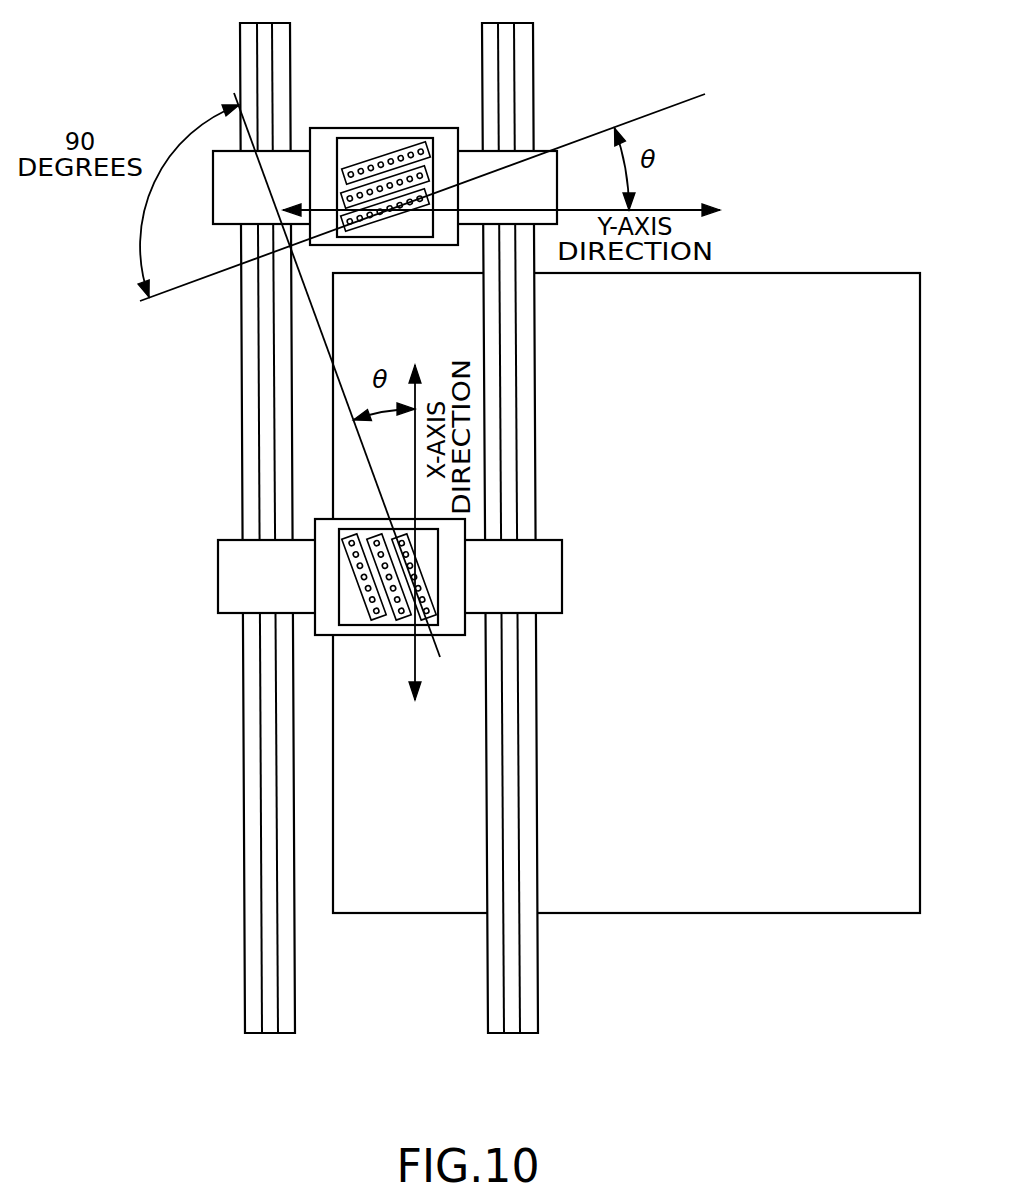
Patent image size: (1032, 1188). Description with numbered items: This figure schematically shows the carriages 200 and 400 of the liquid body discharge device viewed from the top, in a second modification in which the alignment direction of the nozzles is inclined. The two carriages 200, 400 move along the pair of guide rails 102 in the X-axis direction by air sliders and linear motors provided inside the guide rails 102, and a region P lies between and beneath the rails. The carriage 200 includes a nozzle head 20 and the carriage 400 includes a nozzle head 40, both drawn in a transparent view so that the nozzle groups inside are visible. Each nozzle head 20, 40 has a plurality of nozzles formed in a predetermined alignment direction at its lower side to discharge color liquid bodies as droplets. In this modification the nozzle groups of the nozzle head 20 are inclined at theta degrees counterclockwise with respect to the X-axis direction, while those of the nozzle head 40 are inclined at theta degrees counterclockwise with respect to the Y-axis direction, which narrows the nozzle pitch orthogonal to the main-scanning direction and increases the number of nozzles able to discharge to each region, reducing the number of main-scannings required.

The recording medium P is at (822, 271).
The guide rails 102 is at (250, 721).
The carriage 400 is at (323, 138).
The nozzle head 40 is at (390, 140).
The carriage 200 is at (452, 617).
The nozzle head 20 is at (357, 616).